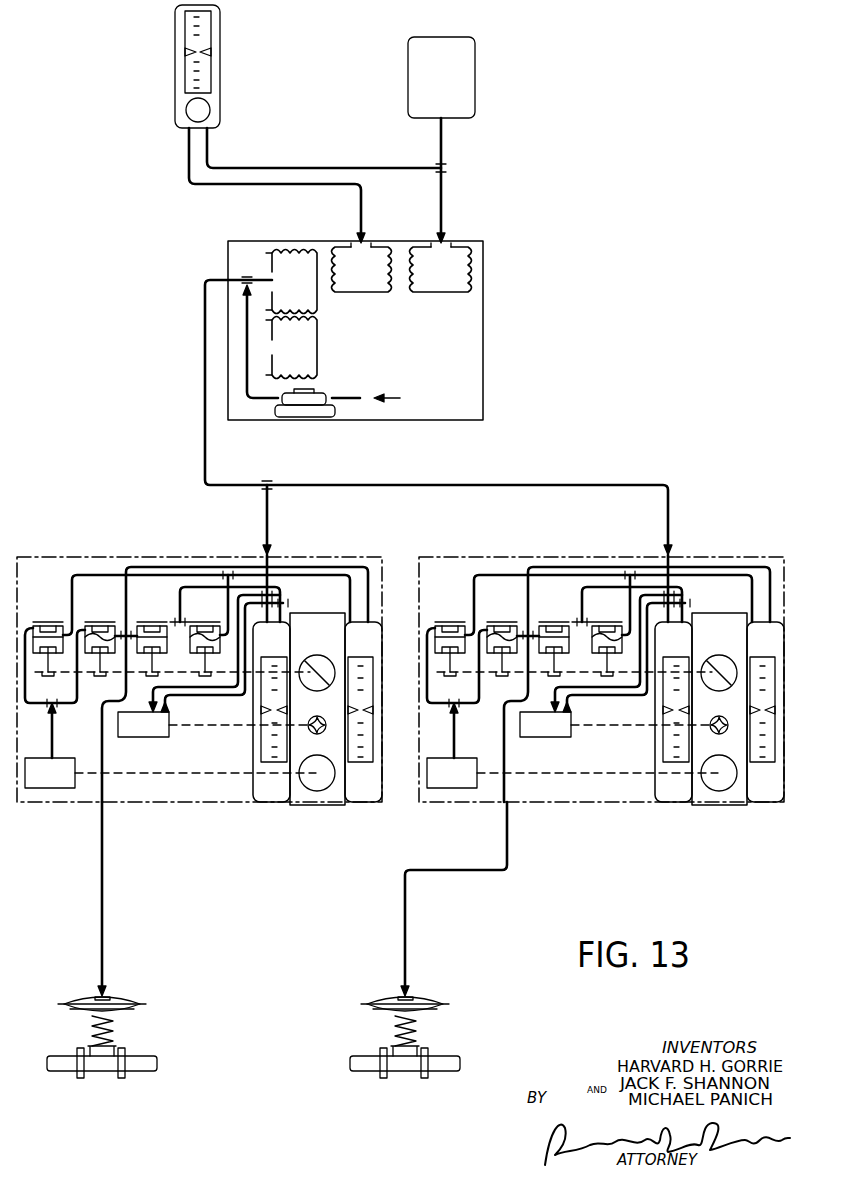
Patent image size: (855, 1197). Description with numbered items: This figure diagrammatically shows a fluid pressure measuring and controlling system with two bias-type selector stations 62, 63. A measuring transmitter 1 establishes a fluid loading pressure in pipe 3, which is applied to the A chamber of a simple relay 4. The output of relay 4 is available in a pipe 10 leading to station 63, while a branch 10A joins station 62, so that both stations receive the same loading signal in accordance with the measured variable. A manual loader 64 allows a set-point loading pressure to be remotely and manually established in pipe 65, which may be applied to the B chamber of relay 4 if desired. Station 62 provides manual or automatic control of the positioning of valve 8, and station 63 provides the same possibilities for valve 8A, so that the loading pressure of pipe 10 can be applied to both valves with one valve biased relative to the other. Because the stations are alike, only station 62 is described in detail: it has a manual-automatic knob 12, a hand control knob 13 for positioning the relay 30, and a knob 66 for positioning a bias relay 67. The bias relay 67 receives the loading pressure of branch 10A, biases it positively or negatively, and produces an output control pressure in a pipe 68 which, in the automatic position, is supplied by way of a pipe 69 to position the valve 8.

The measuring transmitter 1 is at (447, 84).
The pipe 3 is at (443, 203).
The simple relay 4 is at (408, 361).
The valve 8 is at (136, 1041).
The valve 8A is at (447, 1041).
The pipe 10 is at (523, 486).
The branch 10A is at (262, 511).
The manual-automatic knob 12 is at (317, 721).
The hand control knob 13 is at (317, 791).
The relay 30 is at (63, 758).
The selector station 62 is at (199, 695).
The selector station 63 is at (578, 806).
The manual loader 64 is at (222, 70).
The pipe 65 is at (235, 187).
The knob 66 is at (311, 718).
The bias relay 67 is at (160, 737).
The pipe 68 is at (193, 700).
The pipe 69 is at (104, 905).